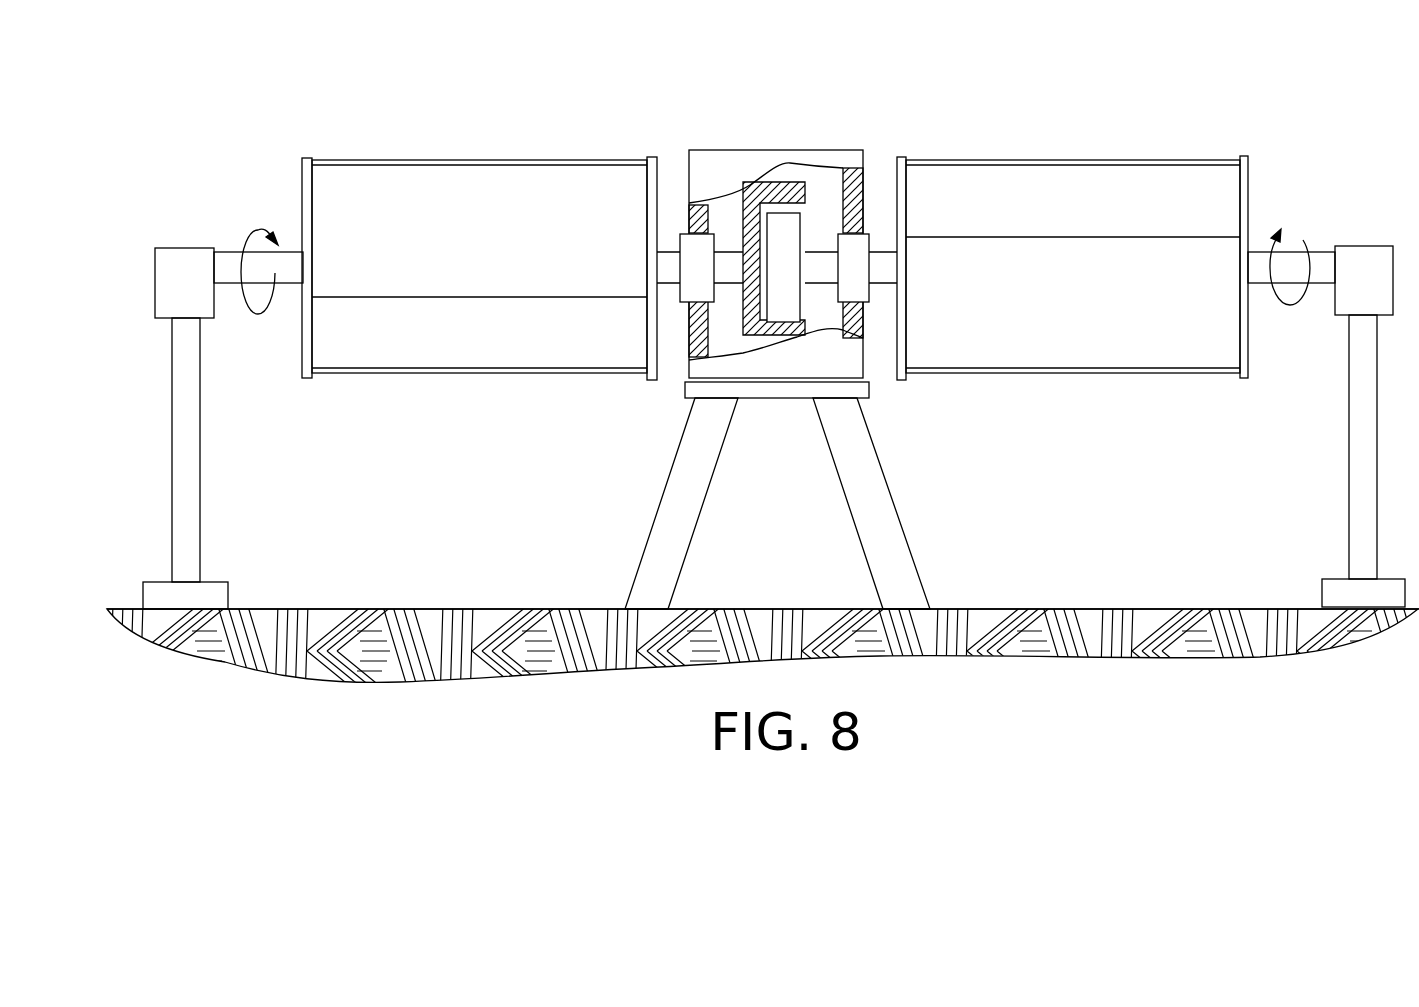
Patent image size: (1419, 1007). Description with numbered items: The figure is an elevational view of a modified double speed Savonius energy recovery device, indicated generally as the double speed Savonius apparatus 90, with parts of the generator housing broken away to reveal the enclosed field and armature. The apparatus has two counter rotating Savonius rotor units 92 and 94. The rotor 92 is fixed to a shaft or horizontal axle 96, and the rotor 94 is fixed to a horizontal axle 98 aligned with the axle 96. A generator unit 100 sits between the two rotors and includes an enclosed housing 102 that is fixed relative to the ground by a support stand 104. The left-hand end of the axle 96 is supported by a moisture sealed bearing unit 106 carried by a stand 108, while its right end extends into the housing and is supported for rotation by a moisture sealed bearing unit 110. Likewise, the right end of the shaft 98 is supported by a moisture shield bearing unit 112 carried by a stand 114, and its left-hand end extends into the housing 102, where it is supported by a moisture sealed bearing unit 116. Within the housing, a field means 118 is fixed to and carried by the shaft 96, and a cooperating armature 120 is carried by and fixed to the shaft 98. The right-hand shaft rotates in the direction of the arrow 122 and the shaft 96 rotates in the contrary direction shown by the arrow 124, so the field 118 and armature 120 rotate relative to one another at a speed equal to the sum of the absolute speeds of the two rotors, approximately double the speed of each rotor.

The double speed Savonius apparatus 90 is at (892, 97).
The Savonius rotor unit 92 is at (403, 183).
The Savonius rotor unit 94 is at (1107, 182).
The shaft or horizontal axle 96 is at (227, 265).
The horizontal axle 98 is at (1320, 258).
The generator unit 100 is at (735, 163).
The enclosed housing 102 is at (711, 163).
The support stand 104 is at (867, 477).
The moisture sealed bearing unit 106 is at (183, 273).
The stand 108 is at (185, 463).
The moisture sealed bearing unit 110 is at (685, 295).
The moisture shield bearing unit 112 is at (1355, 257).
The stand 114 is at (1355, 367).
The moisture sealed bearing unit 116 is at (867, 242).
The field means 118 is at (767, 360).
The armature 120 is at (807, 227).
The arrow 122 is at (1293, 303).
The arrow 124 is at (247, 313).